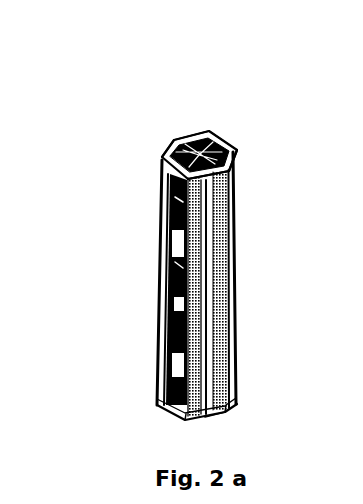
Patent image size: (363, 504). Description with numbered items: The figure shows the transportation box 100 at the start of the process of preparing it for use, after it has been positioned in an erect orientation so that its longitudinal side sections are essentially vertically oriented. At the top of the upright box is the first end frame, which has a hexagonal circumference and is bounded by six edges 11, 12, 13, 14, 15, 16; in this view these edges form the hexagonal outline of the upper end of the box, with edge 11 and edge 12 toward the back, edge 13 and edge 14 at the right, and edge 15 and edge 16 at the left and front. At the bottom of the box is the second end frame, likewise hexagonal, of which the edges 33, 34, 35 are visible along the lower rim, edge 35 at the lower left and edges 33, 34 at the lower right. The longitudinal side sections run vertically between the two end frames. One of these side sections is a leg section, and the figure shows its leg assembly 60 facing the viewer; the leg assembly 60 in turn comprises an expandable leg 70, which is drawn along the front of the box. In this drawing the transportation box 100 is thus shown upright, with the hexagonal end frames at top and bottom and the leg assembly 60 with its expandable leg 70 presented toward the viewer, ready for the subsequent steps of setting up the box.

The transportation box 100 is at (190, 101).
The edge 11 is at (182, 137).
The edge 12 is at (216, 136).
The edge 13 is at (237, 157).
The edge 14 is at (227, 183).
The edge 15 is at (160, 178).
The edge 16 is at (167, 153).
The expandable leg 70 is at (203, 272).
The leg assembly 60 is at (203, 343).
The edge 35 is at (162, 412).
The edge 33 is at (233, 405).
The edge 34 is at (220, 419).